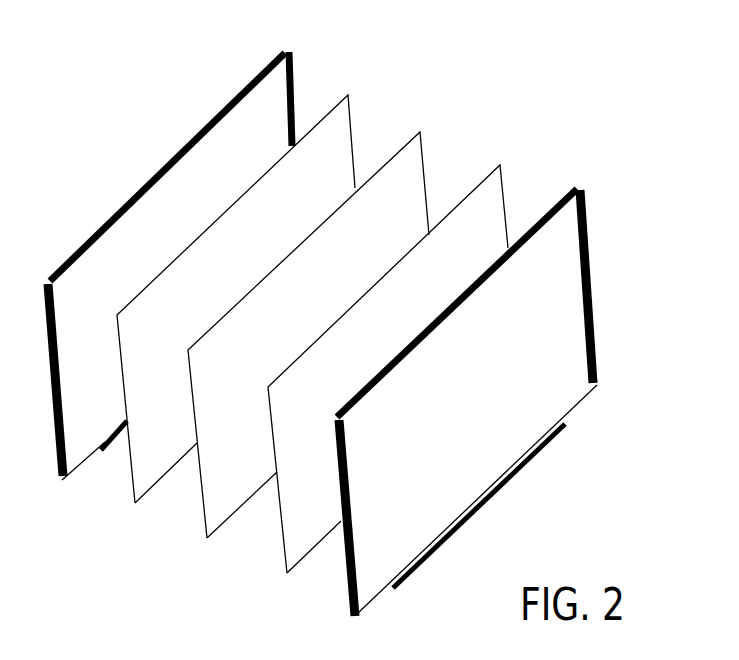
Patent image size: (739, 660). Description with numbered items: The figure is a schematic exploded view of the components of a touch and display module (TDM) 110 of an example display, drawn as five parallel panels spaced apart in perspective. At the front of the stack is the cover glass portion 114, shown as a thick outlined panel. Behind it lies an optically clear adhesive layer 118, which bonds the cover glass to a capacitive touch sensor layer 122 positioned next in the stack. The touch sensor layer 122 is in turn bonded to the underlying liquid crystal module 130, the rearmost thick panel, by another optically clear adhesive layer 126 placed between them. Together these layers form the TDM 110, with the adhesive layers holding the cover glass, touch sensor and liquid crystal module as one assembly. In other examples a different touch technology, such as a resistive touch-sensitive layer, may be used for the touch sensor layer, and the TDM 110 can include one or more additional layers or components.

The touch and display module 110 is at (561, 93).
The cover glass portion 114 is at (583, 213).
The optically clear adhesive layer 118 is at (502, 180).
The capacitive touch sensor layer 122 is at (425, 153).
The optically clear adhesive layer 126 is at (350, 113).
The liquid crystal module 130 is at (290, 66).